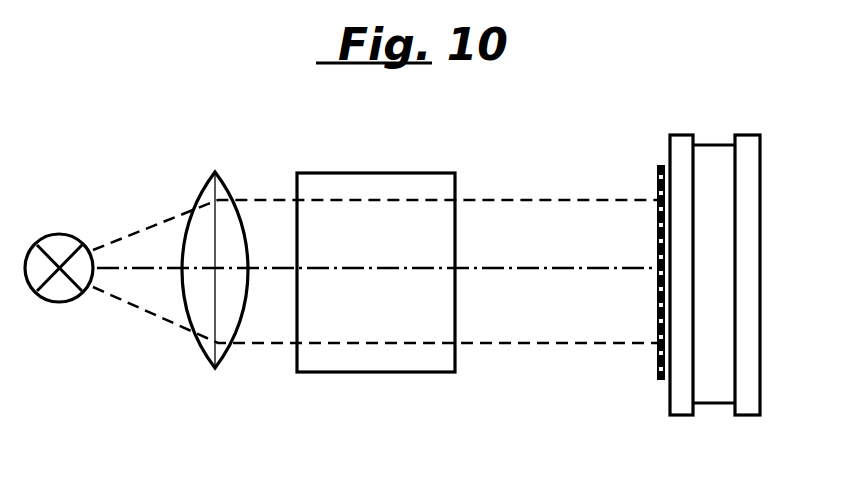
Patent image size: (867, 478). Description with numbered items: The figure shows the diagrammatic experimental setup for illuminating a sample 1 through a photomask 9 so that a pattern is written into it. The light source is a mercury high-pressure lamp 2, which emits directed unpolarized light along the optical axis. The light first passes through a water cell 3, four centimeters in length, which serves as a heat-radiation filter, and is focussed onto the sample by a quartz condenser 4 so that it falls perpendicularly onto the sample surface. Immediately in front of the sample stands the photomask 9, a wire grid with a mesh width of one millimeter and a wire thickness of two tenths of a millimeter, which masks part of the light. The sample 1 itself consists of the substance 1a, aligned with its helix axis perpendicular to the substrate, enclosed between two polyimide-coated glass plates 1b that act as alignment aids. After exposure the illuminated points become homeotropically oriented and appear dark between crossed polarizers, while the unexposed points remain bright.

The sample 1 is at (699, 255).
The substance 1a is at (714, 388).
The glass plates 1b is at (680, 388).
The mercury high-pressure lamp 2 is at (56, 290).
The water cell 3 is at (378, 360).
The quartz condenser 4 is at (222, 352).
The photomask 9 is at (658, 182).